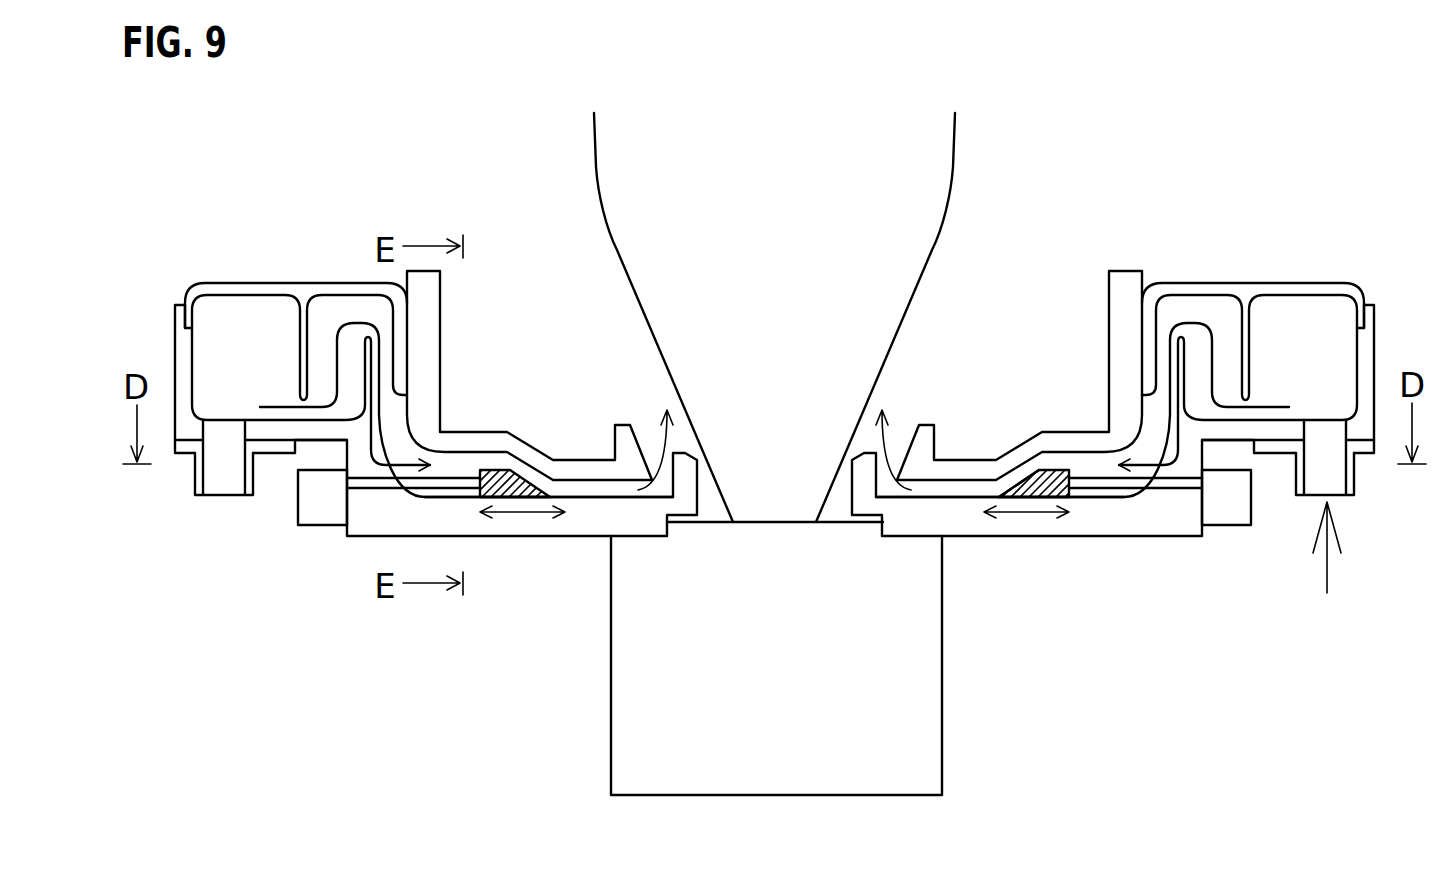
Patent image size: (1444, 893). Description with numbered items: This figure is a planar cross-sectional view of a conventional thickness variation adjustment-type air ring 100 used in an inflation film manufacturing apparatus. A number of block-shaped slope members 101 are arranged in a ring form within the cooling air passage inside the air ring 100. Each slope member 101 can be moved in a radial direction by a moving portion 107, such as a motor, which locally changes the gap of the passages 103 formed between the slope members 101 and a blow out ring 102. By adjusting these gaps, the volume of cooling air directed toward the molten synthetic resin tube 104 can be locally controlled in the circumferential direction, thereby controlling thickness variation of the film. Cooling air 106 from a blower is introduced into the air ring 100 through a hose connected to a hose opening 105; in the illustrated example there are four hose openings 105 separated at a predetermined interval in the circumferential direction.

The air ring 100 is at (1280, 258).
The slope member 101 is at (1052, 497).
The blow out ring 102 is at (991, 478).
The passage 103 is at (1025, 478).
The molten synthetic resin tube 104 is at (898, 312).
The hose opening 105 is at (1352, 497).
The cooling air 106 is at (1344, 573).
The moving portion 107 is at (1232, 512).